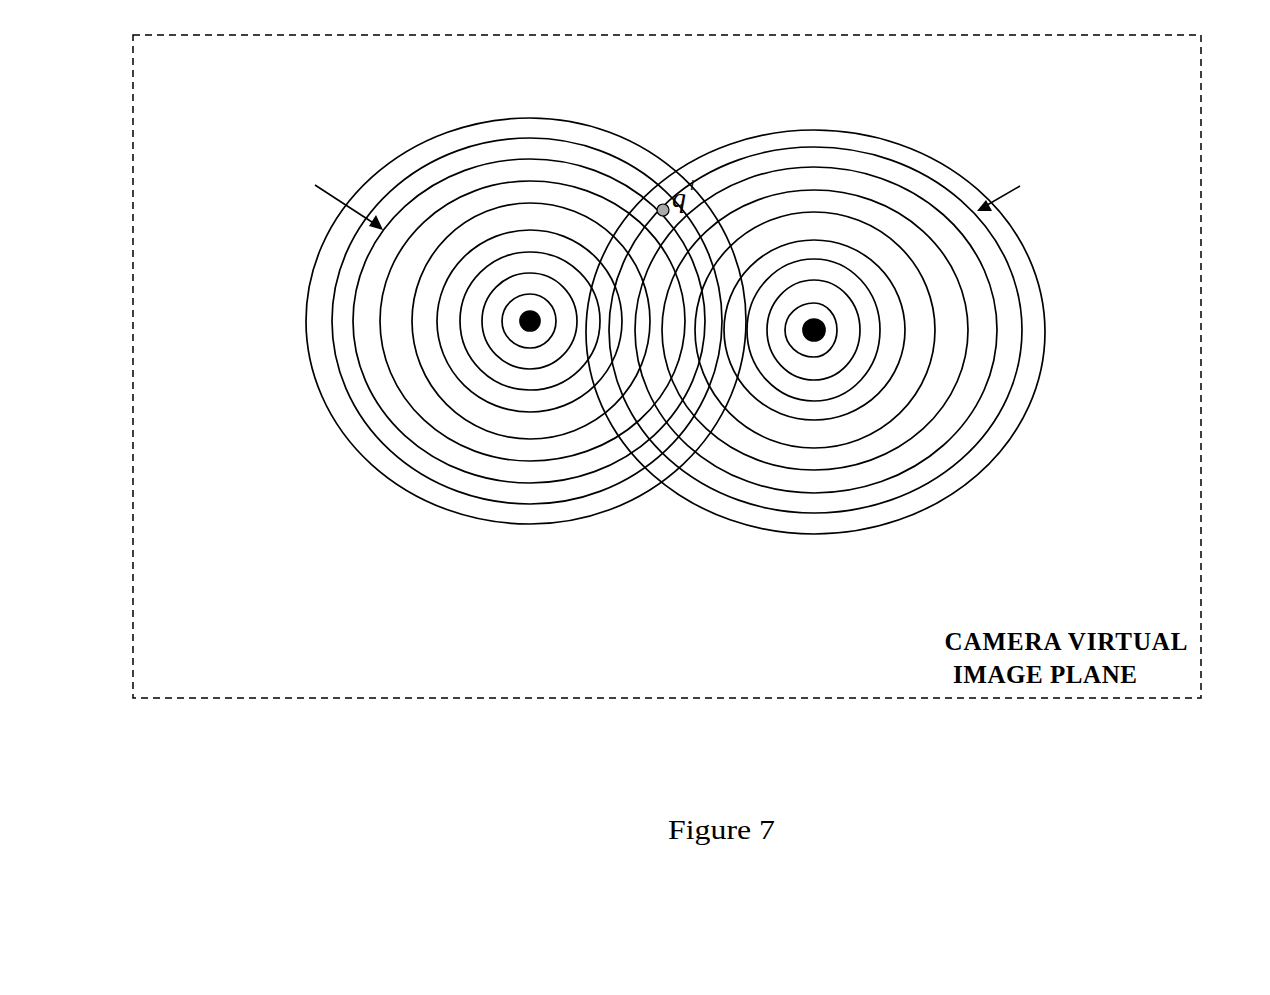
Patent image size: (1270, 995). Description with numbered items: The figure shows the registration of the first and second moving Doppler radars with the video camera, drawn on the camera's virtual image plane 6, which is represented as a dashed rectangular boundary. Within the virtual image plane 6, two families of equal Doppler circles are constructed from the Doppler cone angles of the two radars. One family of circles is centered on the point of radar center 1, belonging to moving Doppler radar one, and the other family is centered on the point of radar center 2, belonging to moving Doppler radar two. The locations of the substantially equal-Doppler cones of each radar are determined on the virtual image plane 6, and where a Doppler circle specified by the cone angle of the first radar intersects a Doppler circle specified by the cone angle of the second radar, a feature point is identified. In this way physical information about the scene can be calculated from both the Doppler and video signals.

The virtual image plane 6 is at (1167, 341).
The moving doppler radar one center C1 and equal doppler circles 1 is at (492, 336).
The moving doppler radar two center C2 and equal doppler circles 2 is at (828, 339).